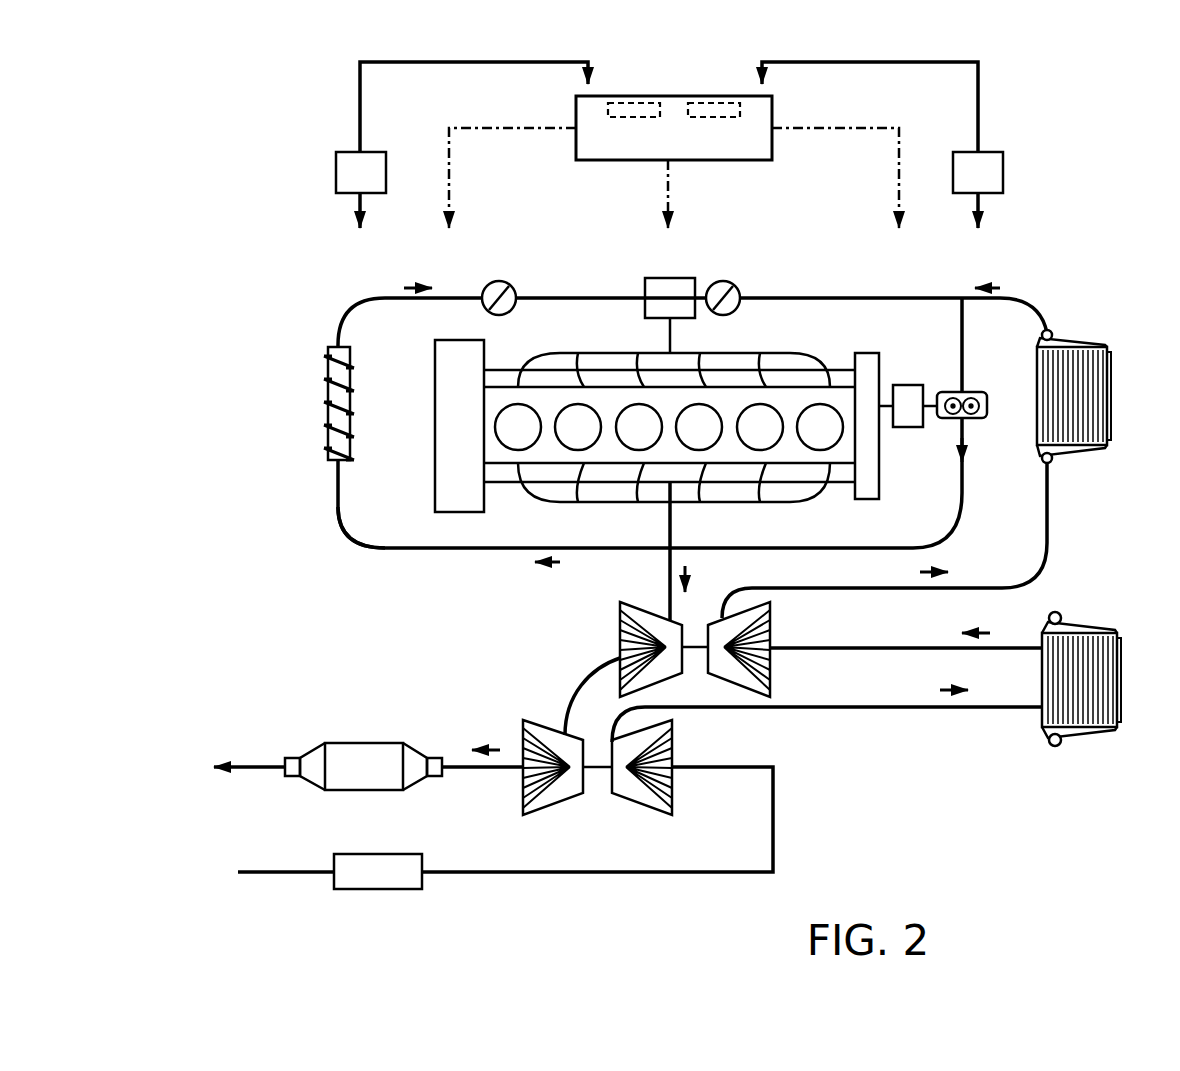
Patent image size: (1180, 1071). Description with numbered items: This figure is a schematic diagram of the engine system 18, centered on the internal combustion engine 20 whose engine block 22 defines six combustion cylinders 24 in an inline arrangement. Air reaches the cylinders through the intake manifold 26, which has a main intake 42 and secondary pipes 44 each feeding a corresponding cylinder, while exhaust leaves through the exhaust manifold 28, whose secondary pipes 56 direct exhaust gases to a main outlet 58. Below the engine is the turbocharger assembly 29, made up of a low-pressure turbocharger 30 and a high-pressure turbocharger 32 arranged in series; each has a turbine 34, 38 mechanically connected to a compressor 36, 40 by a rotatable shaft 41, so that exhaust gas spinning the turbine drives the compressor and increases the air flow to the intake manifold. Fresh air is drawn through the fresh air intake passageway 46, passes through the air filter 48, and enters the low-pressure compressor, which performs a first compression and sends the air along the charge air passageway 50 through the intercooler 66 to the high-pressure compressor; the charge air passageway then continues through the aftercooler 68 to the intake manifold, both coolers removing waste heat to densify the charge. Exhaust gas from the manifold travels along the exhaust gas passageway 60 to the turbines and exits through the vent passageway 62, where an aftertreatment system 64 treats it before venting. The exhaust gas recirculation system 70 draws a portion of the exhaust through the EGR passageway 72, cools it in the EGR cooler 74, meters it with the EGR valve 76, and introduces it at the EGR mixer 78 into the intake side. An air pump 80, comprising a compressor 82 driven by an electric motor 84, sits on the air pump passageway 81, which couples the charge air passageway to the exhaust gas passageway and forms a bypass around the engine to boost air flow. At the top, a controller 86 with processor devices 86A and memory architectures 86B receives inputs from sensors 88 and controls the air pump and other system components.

The engine system 18 is at (178, 122).
The internal combustion engine 20 is at (646, 421).
The engine block 22 is at (880, 368).
The combustion cylinders 24 is at (512, 432).
The intake manifold 26 is at (822, 332).
The exhaust manifold 28 is at (540, 512).
The turbocharger assembly 29 is at (552, 690).
The low-pressure turbocharger 30 is at (663, 781).
The high-pressure turbocharger 32 is at (755, 717).
The turbine 34 is at (620, 616).
The compressor 36 is at (778, 628).
The turbine 38 is at (527, 797).
The compressor 40 is at (675, 735).
The rotatable shaft 41 is at (700, 650).
The main intake 42 is at (672, 345).
The secondary pipes 44 is at (520, 365).
The fresh air intake passageway 46 is at (265, 872).
The air filter 48 is at (365, 889).
The charge air passageway 50 is at (1020, 305).
The secondary pipes 56 is at (805, 500).
The main outlet 58 is at (670, 522).
The exhaust gas passageway 60 is at (670, 588).
The vent passageway 62 is at (483, 767).
The aftertreatment system 64 is at (363, 790).
The intercooler 66 is at (1118, 687).
The aftercooler 68 is at (1110, 403).
The exhaust gas recirculation system 70 is at (276, 318).
The EGR passageway 72 is at (352, 540).
The EGR cooler 74 is at (325, 392).
The EGR valve 76 is at (508, 283).
The EGR mixer 78 is at (675, 278).
The air pump 80 is at (920, 370).
The air pump passageway 81 is at (945, 520).
The compressor 82 is at (975, 392).
The electric motor 84 is at (908, 427).
The controller 86 is at (712, 160).
The processor devices 86A is at (632, 103).
The memory architectures 86B is at (718, 103).
The sensors 88 is at (336, 172).